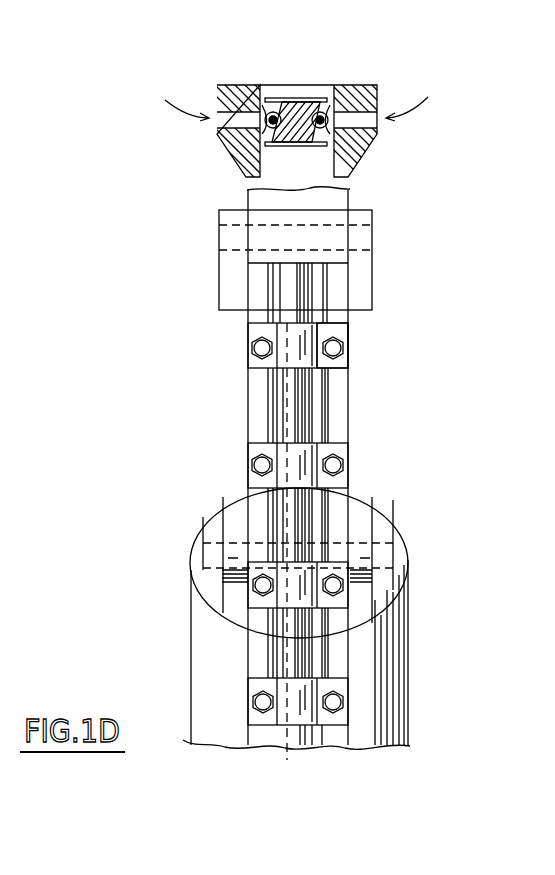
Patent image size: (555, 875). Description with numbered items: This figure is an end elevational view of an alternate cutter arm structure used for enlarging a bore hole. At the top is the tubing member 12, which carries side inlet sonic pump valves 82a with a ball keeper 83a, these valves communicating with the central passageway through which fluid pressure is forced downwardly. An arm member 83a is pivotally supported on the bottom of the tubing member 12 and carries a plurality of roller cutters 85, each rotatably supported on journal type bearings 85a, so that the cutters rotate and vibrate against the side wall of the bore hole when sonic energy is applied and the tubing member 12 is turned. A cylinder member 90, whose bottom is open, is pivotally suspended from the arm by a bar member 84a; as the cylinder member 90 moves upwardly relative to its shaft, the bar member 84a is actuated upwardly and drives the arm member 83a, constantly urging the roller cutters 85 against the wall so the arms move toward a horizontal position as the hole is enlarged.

The tubing member 12 is at (220, 146).
The side inlet sonic pump valve 82a is at (273, 112).
The arm member 83a is at (293, 100).
The bar member 84a is at (233, 536).
The roller cutter 85 is at (331, 410).
The journal type bearing 85a is at (294, 752).
The cylinder member 90 is at (390, 628).